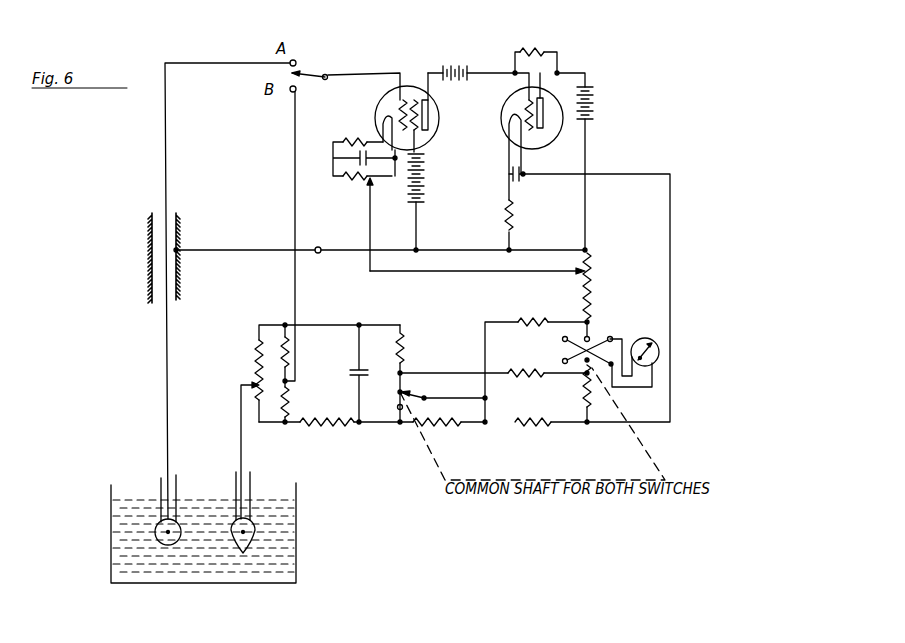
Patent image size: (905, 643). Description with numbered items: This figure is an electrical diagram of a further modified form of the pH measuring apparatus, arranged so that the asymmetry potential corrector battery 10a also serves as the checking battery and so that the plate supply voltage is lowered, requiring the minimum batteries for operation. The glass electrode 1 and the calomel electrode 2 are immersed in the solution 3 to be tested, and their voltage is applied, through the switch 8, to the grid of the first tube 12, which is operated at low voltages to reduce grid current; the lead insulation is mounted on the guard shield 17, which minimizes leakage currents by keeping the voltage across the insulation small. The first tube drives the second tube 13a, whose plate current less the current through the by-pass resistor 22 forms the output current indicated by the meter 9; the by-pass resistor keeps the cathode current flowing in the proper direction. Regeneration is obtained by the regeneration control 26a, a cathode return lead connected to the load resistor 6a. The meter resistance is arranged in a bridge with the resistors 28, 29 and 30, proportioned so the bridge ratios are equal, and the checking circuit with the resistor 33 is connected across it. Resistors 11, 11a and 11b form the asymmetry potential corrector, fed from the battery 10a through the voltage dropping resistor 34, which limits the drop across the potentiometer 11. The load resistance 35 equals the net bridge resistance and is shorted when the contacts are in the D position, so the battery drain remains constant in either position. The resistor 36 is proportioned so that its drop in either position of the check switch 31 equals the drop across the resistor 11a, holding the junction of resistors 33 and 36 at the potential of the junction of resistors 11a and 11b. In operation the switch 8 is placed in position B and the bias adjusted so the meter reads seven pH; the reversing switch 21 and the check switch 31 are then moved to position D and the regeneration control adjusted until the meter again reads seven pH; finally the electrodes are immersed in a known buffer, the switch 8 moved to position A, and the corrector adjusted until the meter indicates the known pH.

The glass electrode 1 is at (160, 482).
The calomel electrode 2 is at (252, 482).
The solution 3 is at (195, 522).
The load resistor 6a is at (592, 285).
The switch 8 is at (302, 69).
The meter 9 is at (648, 338).
The asymmetry potential corrector battery 10a is at (357, 368).
The potentiometer 11 is at (256, 360).
The resistor 11a is at (283, 340).
The resistor 11b is at (304, 400).
The tube 12 is at (437, 133).
The tube 13a is at (500, 108).
The guard shield 17 is at (150, 244).
The reversing switch 21 is at (602, 330).
The by-pass resistor 22 is at (513, 215).
The regeneration control 26a is at (572, 276).
The resistor 28 is at (534, 316).
The resistor 29 is at (542, 412).
The resistor 30 is at (596, 410).
The check switch 31 is at (416, 393).
The resistor 33 is at (526, 368).
The voltage dropping resistor 34 is at (333, 426).
The load resistance 35 is at (455, 426).
The resistor 36 is at (406, 342).